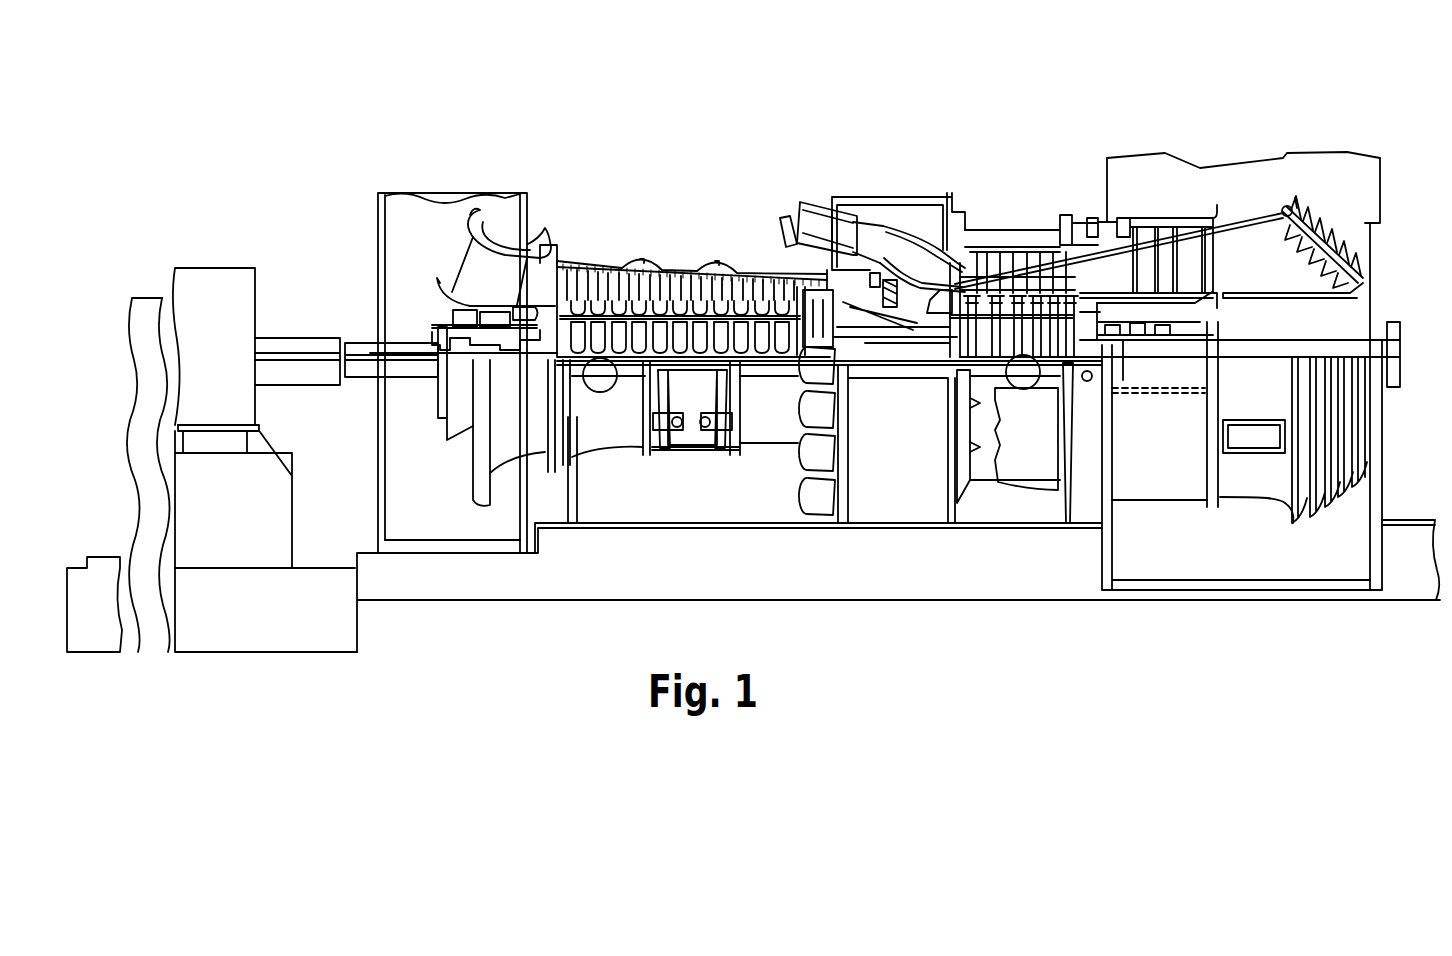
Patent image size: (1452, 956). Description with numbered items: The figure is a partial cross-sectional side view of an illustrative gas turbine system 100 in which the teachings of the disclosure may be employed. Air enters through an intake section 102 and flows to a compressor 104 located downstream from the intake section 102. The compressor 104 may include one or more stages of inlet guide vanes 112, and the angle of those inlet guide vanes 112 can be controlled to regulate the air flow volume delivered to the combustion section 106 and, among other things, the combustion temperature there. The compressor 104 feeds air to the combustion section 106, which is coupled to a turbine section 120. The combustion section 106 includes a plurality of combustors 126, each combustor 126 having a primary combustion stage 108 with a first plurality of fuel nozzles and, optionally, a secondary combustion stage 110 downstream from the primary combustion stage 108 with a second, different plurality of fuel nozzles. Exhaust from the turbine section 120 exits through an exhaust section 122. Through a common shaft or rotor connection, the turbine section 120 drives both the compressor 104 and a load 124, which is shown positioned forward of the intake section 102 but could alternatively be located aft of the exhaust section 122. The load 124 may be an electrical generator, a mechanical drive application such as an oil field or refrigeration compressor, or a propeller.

The gas turbine system 100 is at (603, 616).
The intake section 102 is at (471, 190).
The compressor 104 is at (694, 260).
The combustion section 106 is at (880, 190).
The primary combustion stage 108 is at (842, 180).
The secondary combustion stage 110 is at (993, 182).
The inlet guide vanes 112 is at (493, 277).
The turbine section 120 is at (1033, 221).
The exhaust section 122 is at (1253, 216).
The load 124 is at (225, 297).
The combustors 126 is at (847, 195).